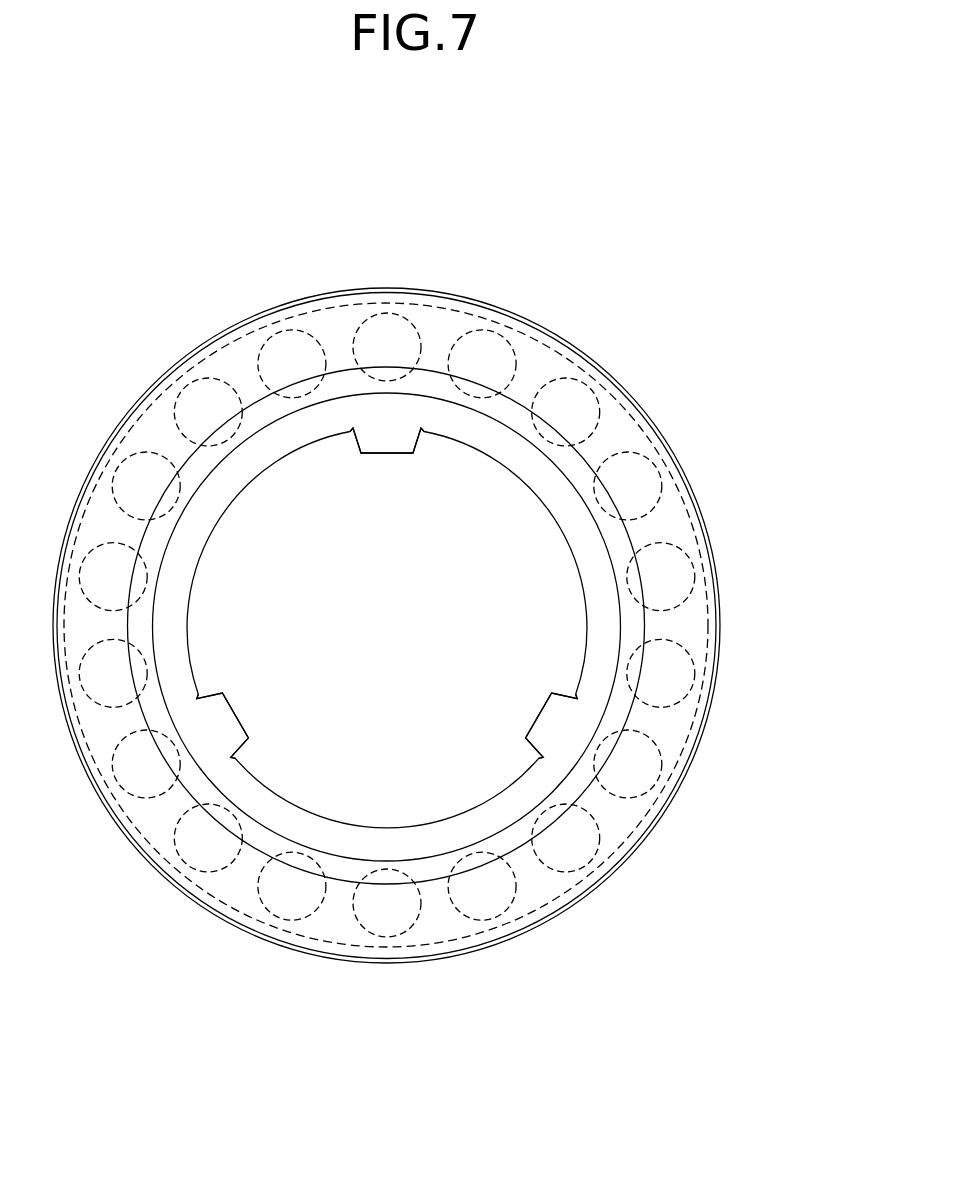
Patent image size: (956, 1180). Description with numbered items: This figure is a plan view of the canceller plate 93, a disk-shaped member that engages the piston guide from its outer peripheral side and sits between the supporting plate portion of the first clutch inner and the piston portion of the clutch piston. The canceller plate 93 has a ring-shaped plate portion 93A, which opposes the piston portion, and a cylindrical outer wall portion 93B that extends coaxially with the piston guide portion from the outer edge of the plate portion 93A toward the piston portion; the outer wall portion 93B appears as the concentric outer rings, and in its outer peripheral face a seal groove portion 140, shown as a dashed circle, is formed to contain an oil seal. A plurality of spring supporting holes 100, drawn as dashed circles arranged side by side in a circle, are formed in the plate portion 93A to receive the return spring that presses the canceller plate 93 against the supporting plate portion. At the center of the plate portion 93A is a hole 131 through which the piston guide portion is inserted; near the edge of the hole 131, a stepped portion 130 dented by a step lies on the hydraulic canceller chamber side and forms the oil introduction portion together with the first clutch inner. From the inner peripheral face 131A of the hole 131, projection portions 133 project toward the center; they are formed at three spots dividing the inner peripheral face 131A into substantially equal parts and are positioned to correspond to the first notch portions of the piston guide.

The canceller plate 93 is at (638, 178).
The plate portion 93A is at (436, 325).
The outer wall portion 93B is at (667, 440).
The spring supporting holes 100 is at (561, 362).
The seal groove portion 140 is at (155, 398).
The stepped portion 130 is at (502, 808).
The hole 131 is at (545, 570).
The inner peripheral face 131A is at (586, 653).
The projection portions 133 is at (387, 453).